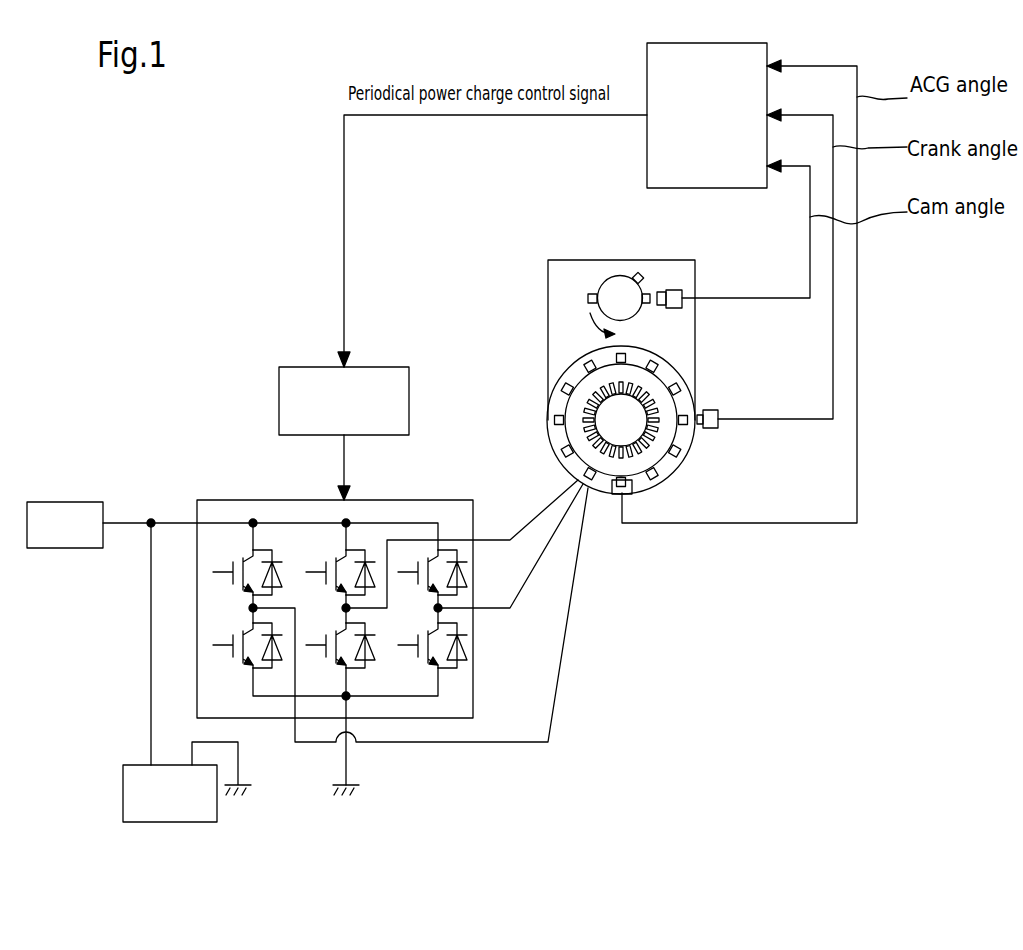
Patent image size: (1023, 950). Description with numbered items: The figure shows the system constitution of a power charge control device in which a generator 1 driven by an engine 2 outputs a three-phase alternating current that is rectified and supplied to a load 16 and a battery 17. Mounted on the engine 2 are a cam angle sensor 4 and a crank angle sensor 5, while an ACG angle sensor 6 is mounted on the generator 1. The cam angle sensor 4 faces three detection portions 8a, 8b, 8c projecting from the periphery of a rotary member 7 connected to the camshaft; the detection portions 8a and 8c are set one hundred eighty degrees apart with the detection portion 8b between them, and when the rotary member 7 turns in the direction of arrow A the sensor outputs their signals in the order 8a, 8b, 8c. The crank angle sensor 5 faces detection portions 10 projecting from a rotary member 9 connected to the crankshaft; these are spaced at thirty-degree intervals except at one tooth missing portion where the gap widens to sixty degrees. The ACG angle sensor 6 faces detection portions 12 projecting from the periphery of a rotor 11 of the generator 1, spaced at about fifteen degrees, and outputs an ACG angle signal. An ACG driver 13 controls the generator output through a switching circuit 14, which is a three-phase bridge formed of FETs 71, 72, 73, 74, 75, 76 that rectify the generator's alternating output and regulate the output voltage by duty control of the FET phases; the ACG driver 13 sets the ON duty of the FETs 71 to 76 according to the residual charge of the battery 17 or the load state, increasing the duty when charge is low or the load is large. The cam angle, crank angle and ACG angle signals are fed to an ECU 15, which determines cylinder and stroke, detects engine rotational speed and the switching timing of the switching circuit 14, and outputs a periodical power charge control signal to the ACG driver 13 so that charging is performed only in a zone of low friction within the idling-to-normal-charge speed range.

The generator 1 is at (556, 404).
The engine 2 is at (678, 328).
The cam angle sensor 4 is at (680, 288).
The crank angle sensor 5 is at (711, 410).
The ACG angle sensor 6 is at (615, 497).
The rotary member 7 is at (608, 290).
The detection portion 8a is at (588, 298).
The detection portion 8b is at (636, 274).
The detection portion 8c is at (648, 292).
The rotary member 9 is at (660, 384).
The detection portions 10 is at (672, 455).
The rotor 11 is at (635, 420).
The detection portions 12 is at (598, 430).
The ACG driver 13 is at (388, 367).
The switching circuit 14 is at (445, 500).
The ECU 15 is at (647, 166).
The load 16 is at (78, 548).
The battery 17 is at (185, 822).
The FET 71 is at (246, 588).
The FET 72 is at (340, 588).
The FET 73 is at (432, 588).
The FET 74 is at (246, 665).
The FET 75 is at (341, 663).
The FET 76 is at (433, 664).
The arrow A is at (590, 322).